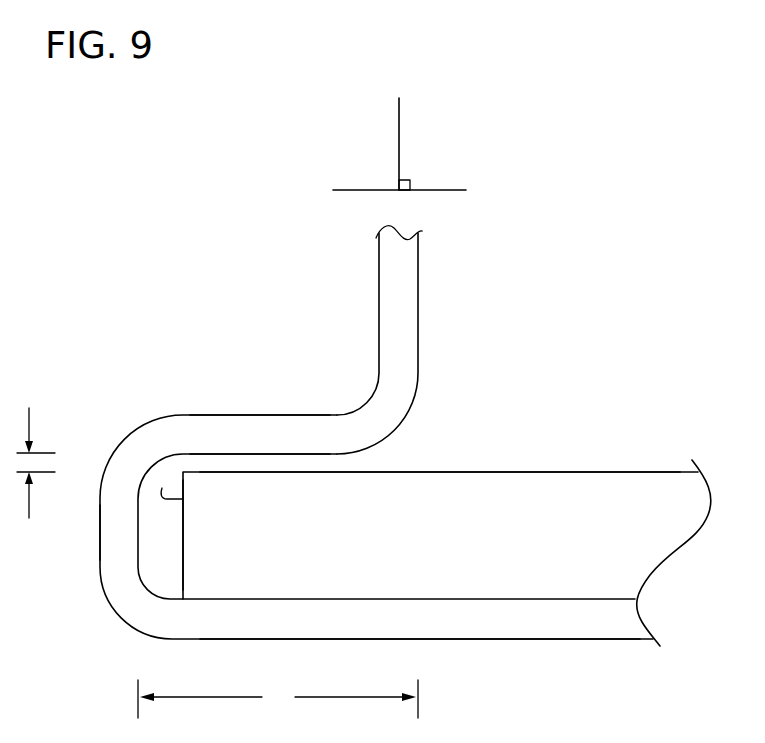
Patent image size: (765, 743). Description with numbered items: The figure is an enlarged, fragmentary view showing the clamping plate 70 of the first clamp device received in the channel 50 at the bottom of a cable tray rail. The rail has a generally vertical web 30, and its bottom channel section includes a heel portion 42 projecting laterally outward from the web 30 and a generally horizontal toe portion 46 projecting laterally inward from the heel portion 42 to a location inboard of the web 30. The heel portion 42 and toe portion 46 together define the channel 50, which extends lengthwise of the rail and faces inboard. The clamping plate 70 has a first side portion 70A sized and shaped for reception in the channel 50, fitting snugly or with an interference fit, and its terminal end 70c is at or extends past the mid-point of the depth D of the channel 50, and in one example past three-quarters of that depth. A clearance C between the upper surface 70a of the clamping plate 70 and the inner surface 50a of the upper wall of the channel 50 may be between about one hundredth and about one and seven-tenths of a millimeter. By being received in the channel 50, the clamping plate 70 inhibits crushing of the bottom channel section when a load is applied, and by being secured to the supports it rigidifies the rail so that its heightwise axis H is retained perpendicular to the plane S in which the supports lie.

The web 30 is at (392, 268).
The heel portion 42 is at (103, 555).
The toe portion 46 is at (515, 615).
The channel 50 is at (138, 540).
The inner surface of the upper wall of the channel 50a is at (270, 455).
The clamping plate 70 is at (502, 512).
The upper surface of the clamping plate 70a is at (427, 472).
The first side portion 70A is at (210, 560).
The terminal end 70c is at (162, 488).
The heightwise axis H is at (400, 123).
The plane S is at (450, 192).
The clearance C is at (36, 449).
The depth D is at (278, 699).